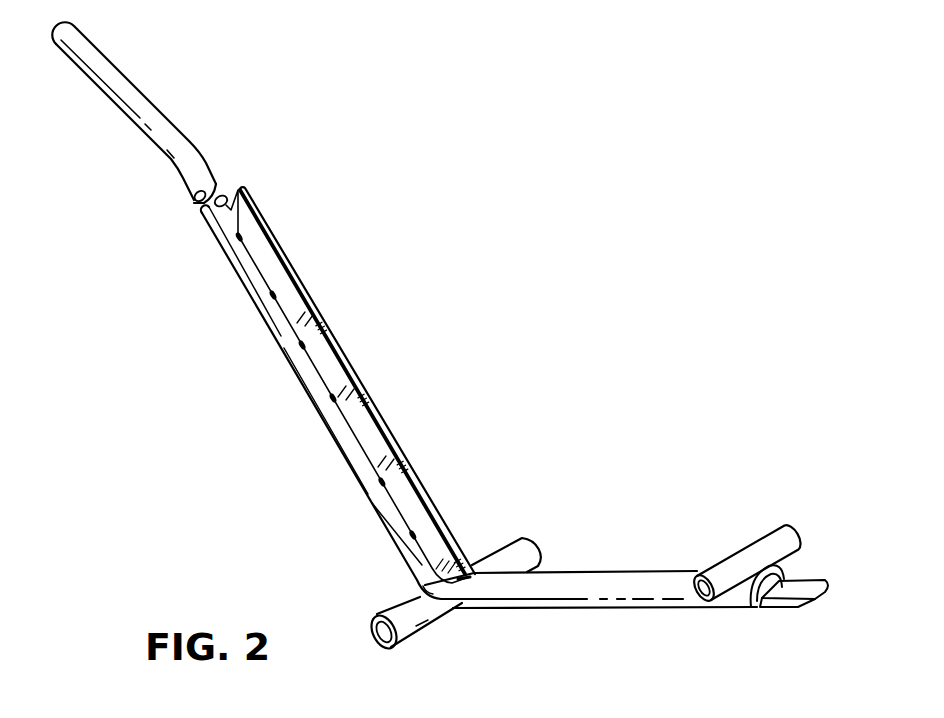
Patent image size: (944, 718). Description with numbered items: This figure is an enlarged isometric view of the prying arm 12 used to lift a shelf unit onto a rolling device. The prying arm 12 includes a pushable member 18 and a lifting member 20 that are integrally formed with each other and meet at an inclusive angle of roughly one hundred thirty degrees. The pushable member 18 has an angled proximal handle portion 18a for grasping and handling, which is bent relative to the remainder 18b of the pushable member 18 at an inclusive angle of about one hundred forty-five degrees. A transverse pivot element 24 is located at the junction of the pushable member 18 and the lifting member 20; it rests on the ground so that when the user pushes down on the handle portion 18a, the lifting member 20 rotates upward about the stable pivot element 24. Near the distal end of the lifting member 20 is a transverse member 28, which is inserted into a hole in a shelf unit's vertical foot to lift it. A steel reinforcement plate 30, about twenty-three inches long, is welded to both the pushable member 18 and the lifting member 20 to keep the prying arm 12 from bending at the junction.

The prying arm 12 is at (440, 340).
The pushable member 18 is at (367, 310).
The handle portion 18a is at (153, 107).
The remainder of the pushable member 18b is at (260, 318).
The lifting member 20 is at (590, 621).
The transverse pivot element 24 is at (397, 610).
The transverse member 28 is at (727, 567).
The reinforcement plate 30 is at (357, 392).